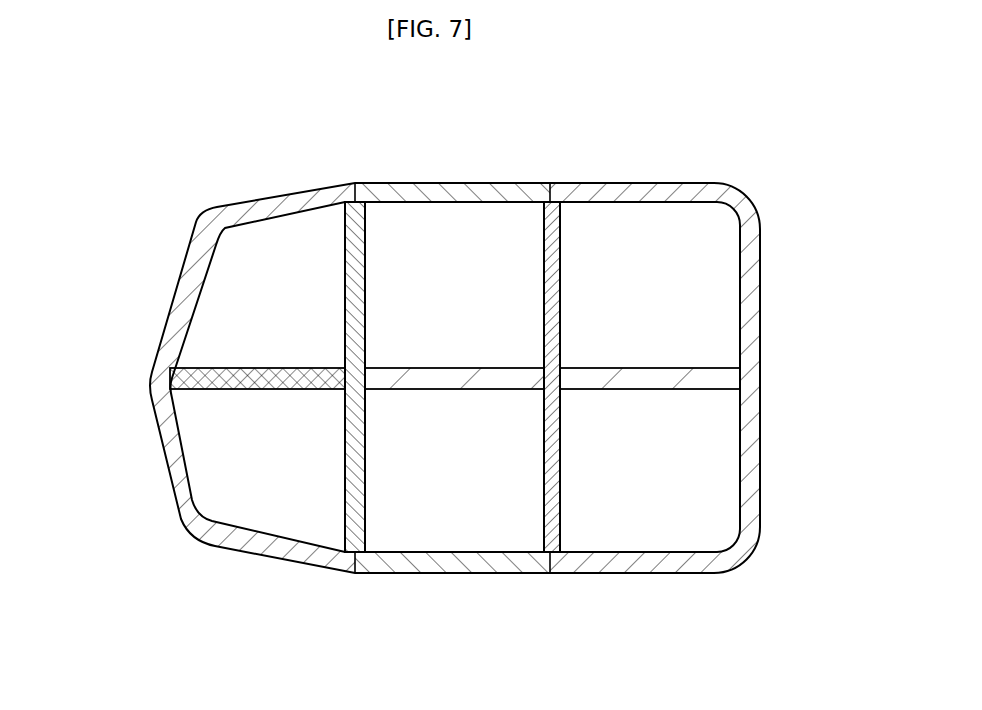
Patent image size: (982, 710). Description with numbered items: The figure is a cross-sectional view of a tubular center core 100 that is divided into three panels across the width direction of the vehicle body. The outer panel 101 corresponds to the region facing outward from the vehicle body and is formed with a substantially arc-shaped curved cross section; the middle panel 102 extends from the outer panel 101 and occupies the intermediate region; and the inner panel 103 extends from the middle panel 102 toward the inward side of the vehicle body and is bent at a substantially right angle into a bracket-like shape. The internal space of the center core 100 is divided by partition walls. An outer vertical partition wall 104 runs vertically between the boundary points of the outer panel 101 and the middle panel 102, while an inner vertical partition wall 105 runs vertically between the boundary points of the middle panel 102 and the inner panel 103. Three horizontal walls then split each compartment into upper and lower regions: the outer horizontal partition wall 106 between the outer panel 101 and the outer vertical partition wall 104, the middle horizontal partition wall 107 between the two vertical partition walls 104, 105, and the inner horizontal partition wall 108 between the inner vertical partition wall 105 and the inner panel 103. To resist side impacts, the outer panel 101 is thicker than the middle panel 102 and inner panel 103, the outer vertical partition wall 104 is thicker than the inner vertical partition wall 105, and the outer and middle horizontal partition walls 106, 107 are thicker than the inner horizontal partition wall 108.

The center core 100 is at (200, 207).
The outer panel 101 is at (172, 322).
The middle panel 102 is at (515, 190).
The inner panel 103 is at (750, 448).
The outer vertical partition wall 104 is at (357, 477).
The inner vertical partition wall 105 is at (555, 463).
The outer horizontal partition wall 106 is at (218, 380).
The middle horizontal partition wall 107 is at (411, 372).
The inner horizontal partition wall 108 is at (667, 365).